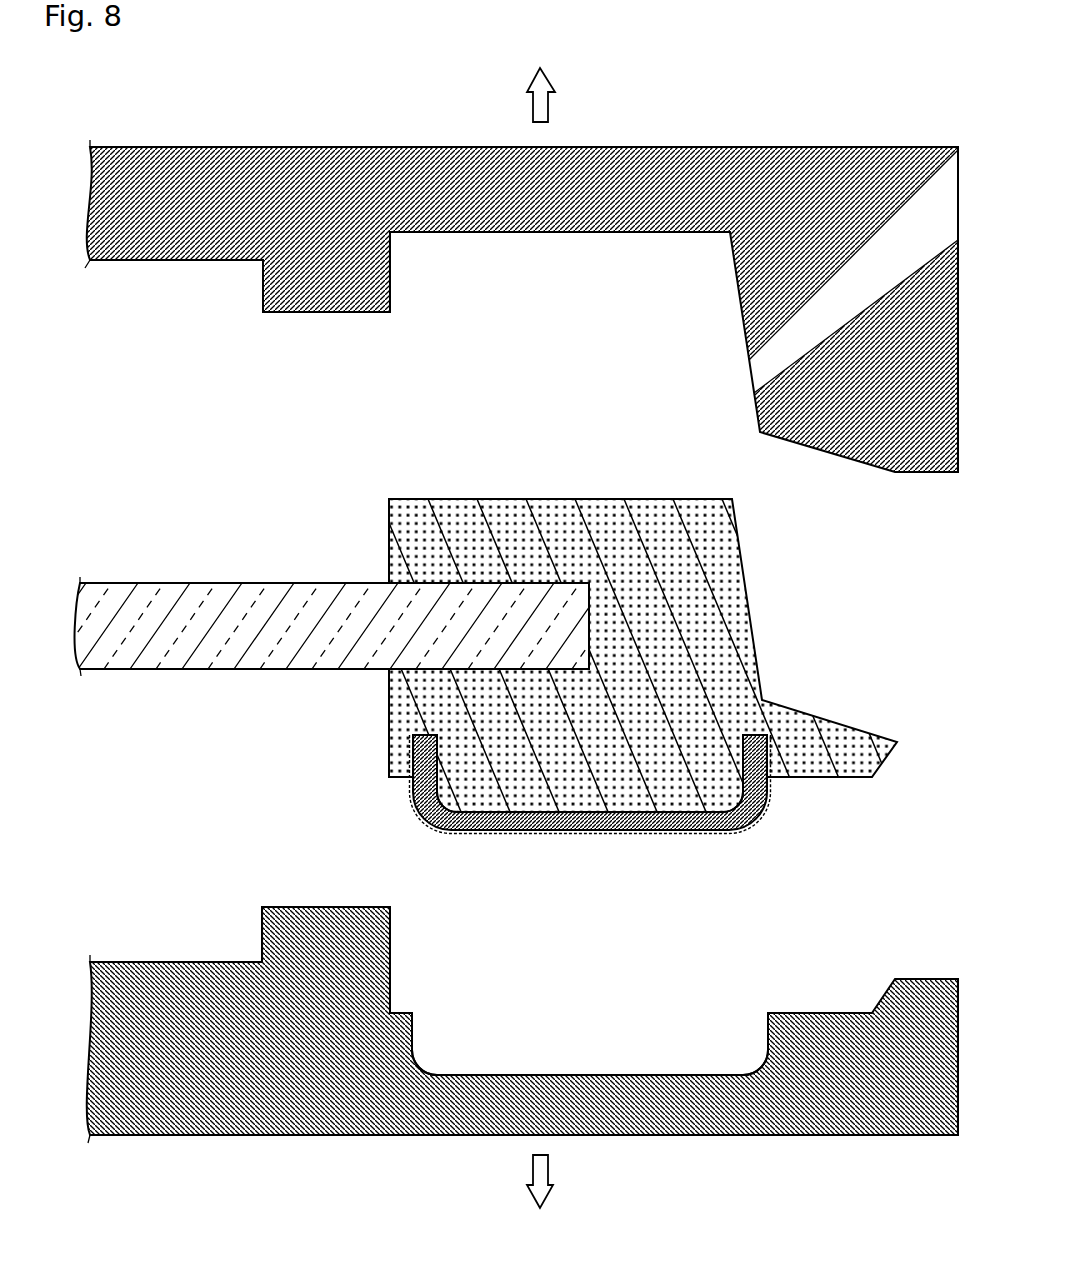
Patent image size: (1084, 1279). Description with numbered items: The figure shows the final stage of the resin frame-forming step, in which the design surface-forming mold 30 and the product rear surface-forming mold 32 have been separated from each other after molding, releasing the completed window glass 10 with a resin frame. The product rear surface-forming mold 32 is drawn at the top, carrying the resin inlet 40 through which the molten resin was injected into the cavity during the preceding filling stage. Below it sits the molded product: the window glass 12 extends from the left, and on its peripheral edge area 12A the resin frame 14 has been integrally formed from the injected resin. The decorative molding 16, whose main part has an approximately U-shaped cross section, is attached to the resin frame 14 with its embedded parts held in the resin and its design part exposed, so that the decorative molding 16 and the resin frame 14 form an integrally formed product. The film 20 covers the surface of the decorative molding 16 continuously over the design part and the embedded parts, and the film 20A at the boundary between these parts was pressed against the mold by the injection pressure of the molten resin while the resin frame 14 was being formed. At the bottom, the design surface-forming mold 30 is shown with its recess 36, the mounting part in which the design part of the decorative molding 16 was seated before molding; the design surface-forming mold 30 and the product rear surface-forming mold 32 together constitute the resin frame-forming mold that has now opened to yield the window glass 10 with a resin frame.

The window glass with a resin frame 10 is at (490, 646).
The window glass 12 is at (229, 583).
The peripheral edge area 12A is at (535, 592).
The resin frame 14 is at (556, 499).
The decorative molding 16 is at (578, 823).
The film 20 is at (651, 835).
The film 20A is at (412, 778).
The design surface-forming mold 30 is at (522, 1065).
The product rear surface-forming mold 32 is at (521, 275).
The recess 36 is at (586, 1075).
The resin inlet 40 is at (850, 266).